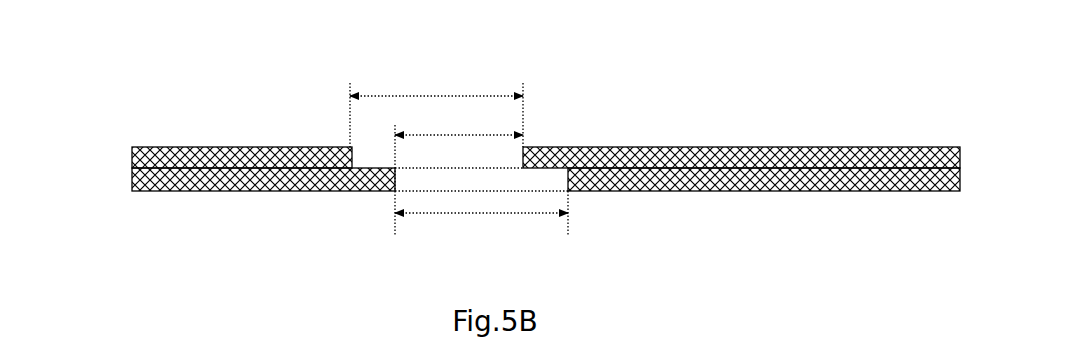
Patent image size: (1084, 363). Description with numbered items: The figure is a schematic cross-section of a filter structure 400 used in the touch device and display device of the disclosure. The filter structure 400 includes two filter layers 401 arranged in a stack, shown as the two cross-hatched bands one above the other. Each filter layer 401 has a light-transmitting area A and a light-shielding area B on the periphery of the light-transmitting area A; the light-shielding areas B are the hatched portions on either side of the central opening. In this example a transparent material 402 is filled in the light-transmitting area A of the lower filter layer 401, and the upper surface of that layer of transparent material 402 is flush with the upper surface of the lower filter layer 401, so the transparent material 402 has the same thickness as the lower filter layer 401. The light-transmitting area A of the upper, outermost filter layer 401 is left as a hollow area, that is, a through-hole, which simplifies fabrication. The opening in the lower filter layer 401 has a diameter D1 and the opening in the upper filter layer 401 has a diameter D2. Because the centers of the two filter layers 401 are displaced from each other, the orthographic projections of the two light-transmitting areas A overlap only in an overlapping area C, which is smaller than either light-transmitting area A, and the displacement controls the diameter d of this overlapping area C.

The filter structure 400 is at (503, 169).
The filter layer 401 is at (132, 180).
The transparent material 402 is at (548, 177).
The light-transmitting area A is at (375, 160).
The light-shielding area B is at (280, 148).
The overlapping area C is at (473, 135).
The diameter of the lower through-hole D1 is at (481, 213).
The diameter of the upper through-hole D2 is at (436, 116).
The diameter of the overlapping area d is at (459, 158).